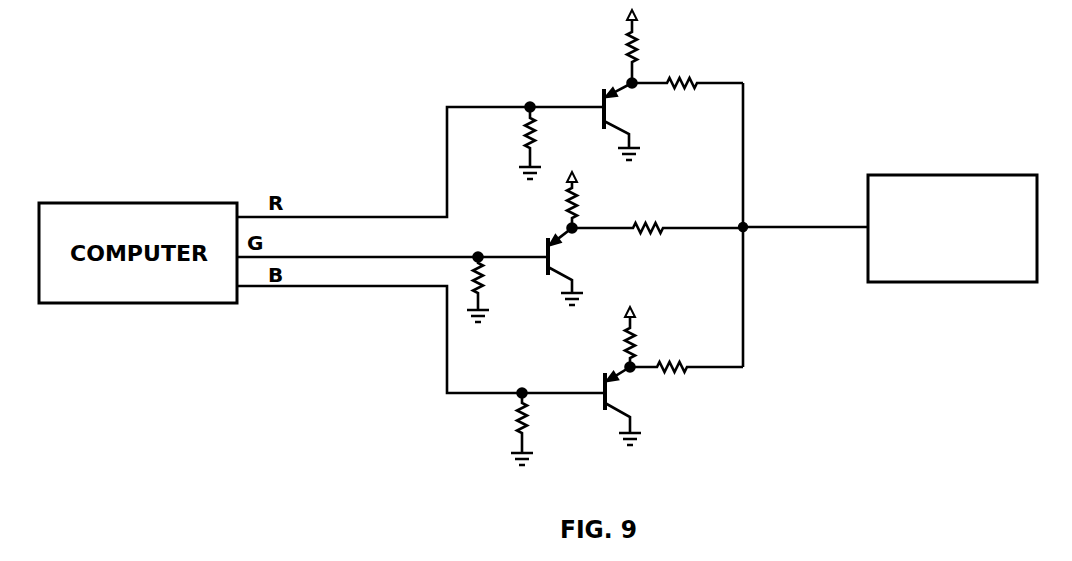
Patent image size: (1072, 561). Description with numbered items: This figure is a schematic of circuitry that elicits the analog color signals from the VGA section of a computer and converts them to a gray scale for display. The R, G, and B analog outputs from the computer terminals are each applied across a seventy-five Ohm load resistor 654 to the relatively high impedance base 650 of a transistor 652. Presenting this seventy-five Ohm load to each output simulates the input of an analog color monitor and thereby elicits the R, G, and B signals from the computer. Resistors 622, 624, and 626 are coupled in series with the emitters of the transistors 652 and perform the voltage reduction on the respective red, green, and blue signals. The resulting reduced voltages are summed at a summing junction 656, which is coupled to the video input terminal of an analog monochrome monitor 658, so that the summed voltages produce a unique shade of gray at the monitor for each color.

The resistor 622 is at (689, 78).
The resistor 624 is at (646, 224).
The resistor 626 is at (672, 363).
The base 650 is at (593, 107).
The transistor 652 is at (622, 106).
The load resistor 654 is at (525, 140).
The summing junction 656 is at (754, 218).
The analog monochrome monitor 658 is at (968, 283).